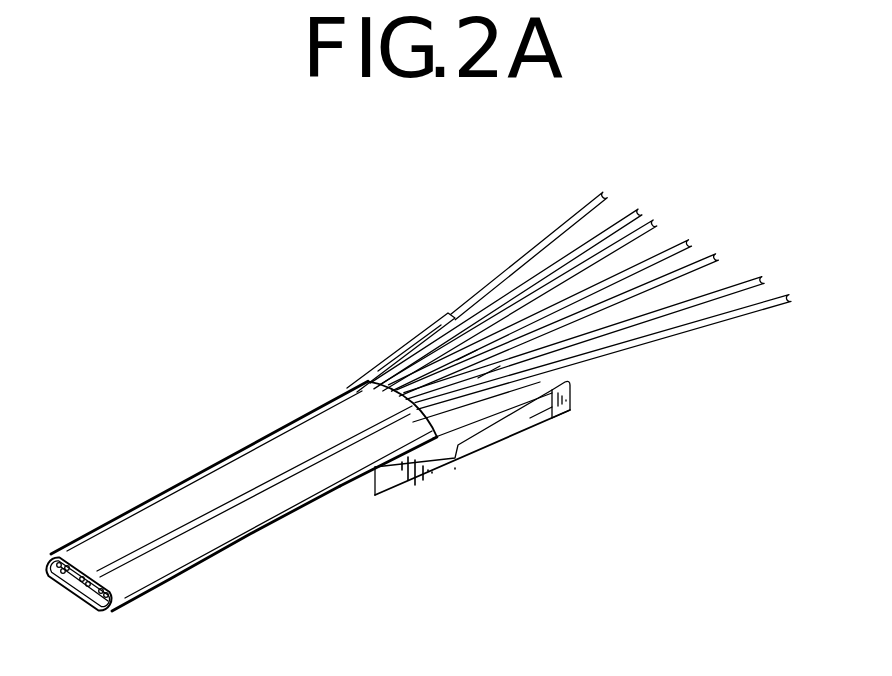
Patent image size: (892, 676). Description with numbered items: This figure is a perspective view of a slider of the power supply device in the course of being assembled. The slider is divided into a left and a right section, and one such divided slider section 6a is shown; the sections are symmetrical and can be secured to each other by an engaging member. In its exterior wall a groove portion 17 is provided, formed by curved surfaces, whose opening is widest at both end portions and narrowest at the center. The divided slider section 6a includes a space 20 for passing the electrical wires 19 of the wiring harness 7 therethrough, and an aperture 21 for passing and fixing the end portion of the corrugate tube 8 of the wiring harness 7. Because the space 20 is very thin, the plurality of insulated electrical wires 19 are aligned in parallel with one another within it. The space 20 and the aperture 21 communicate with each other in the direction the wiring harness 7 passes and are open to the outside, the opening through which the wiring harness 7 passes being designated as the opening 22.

The wiring harness 7 is at (182, 479).
The corrugate tube 8 is at (222, 460).
The groove portion 17 is at (475, 438).
The electrical wires 19 is at (490, 298).
The space 20 is at (420, 342).
The aperture 21 is at (381, 461).
The opening 22 is at (455, 312).
The divided slider section 6a is at (421, 492).